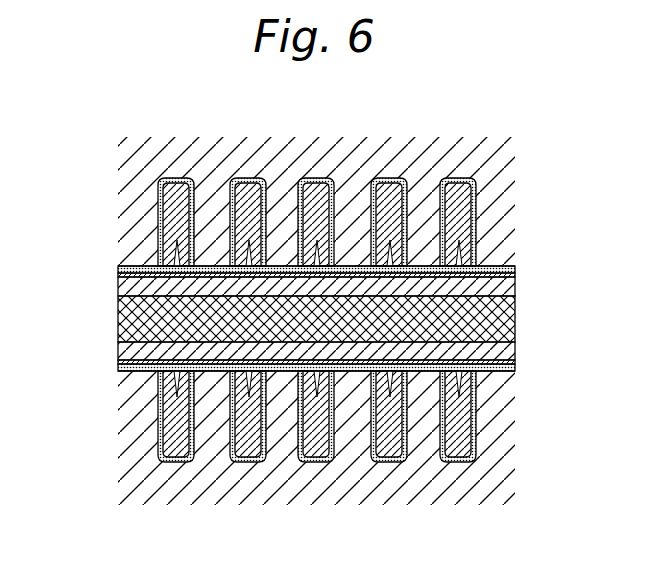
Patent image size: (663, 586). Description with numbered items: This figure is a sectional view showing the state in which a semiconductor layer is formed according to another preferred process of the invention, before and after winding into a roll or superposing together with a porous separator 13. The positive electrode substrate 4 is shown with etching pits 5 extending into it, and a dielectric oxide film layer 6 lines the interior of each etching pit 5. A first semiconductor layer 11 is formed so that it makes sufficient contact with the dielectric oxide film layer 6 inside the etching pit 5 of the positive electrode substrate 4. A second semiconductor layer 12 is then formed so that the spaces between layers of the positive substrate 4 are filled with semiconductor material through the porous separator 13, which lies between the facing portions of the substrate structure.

The positive electrode substrate 4 is at (508, 198).
The etching pit 5 is at (456, 178).
The dielectric oxide film layer 6 is at (518, 271).
The first semiconductor layer 11 is at (118, 273).
The second semiconductor layer 12 is at (118, 358).
The porous separator 13 is at (518, 315).